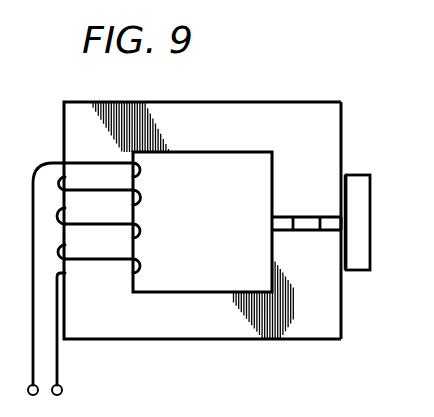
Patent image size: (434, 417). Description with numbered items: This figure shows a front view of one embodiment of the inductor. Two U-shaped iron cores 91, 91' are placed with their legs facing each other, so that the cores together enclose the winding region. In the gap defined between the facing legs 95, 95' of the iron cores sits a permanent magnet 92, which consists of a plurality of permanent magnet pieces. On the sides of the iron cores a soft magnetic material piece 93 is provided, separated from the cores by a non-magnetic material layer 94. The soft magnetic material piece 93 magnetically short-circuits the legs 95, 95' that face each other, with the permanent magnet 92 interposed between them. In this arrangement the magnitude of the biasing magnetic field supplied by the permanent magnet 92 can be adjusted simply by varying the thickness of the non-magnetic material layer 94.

The U-shaped iron core 91 is at (202, 201).
The U-shaped iron core 91' is at (263, 319).
The permanent magnet 92 is at (303, 222).
The soft magnetic material piece 93 is at (360, 227).
The non-magnetic material layer 94 is at (343, 257).
The leg 95 is at (352, 166).
The leg 95' is at (350, 278).